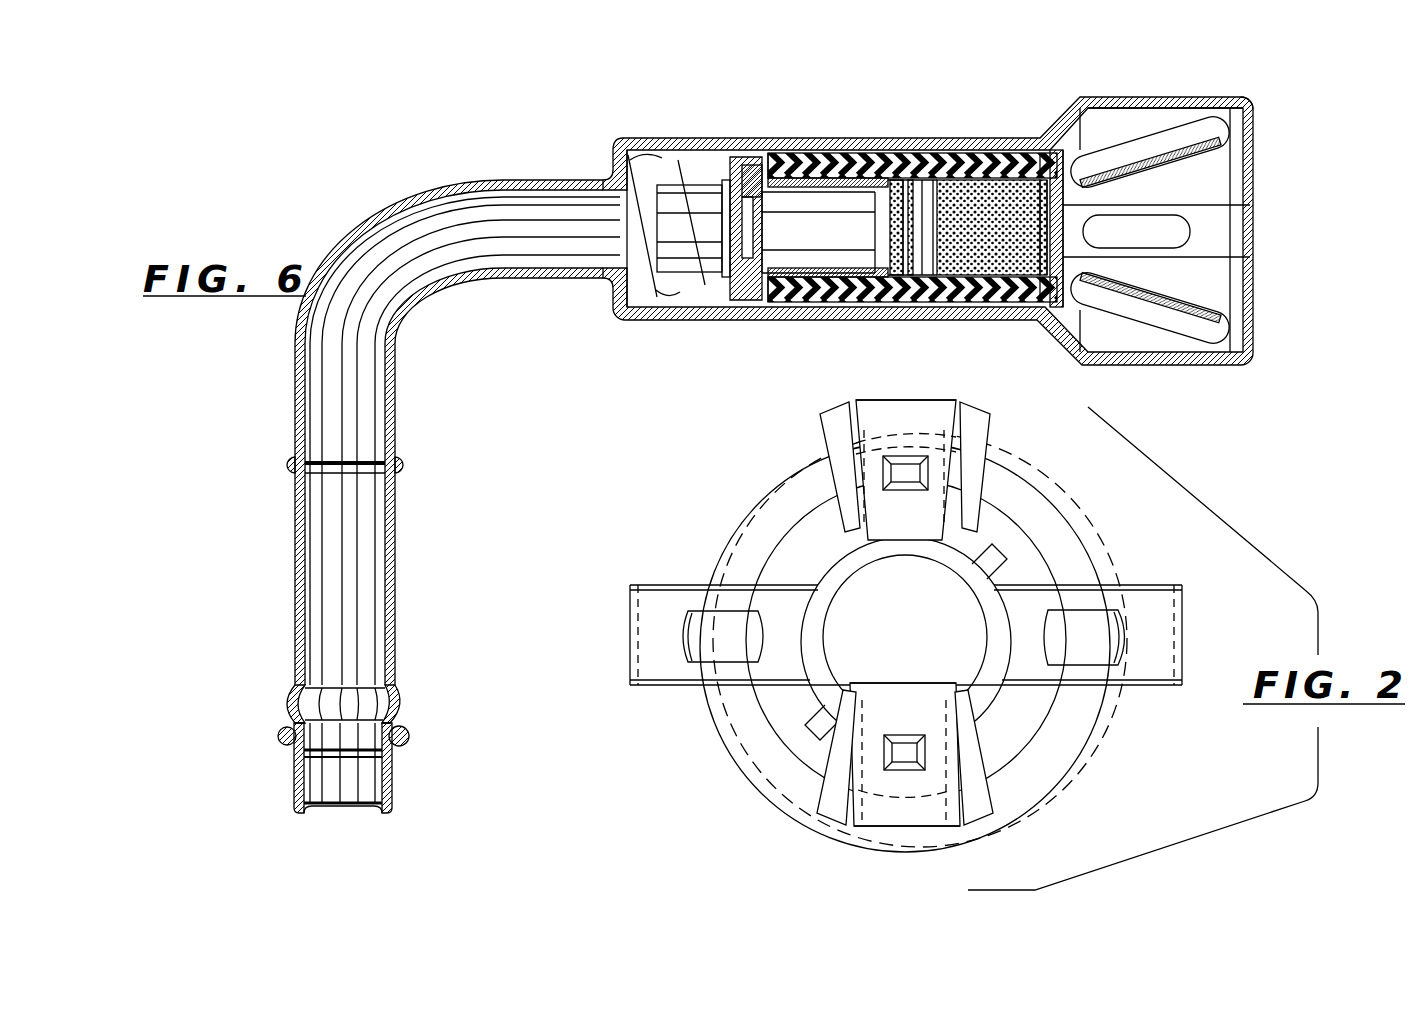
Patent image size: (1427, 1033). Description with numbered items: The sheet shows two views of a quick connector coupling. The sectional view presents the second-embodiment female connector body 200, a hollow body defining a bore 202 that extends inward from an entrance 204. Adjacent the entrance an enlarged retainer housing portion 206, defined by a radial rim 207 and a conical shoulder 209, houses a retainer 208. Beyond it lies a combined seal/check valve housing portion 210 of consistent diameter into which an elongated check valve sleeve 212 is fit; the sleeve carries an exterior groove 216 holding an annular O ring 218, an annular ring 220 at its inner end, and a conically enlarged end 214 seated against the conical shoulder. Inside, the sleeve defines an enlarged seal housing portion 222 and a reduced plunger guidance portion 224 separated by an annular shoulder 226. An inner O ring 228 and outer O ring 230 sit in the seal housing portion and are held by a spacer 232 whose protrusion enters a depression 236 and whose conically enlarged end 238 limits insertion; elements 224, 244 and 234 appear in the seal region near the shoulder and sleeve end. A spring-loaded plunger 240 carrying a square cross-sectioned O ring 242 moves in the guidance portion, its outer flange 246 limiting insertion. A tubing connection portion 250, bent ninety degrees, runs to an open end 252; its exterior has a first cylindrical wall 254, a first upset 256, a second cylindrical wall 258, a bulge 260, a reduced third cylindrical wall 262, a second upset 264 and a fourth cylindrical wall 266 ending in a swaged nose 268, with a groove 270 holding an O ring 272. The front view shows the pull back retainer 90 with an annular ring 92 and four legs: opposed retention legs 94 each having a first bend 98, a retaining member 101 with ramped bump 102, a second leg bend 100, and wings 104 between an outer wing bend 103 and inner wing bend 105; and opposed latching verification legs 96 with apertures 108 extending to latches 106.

In FIG. 6, the female connector body 200 is at (315, 205).
In FIG. 6, the tubing connection portion 250 is at (523, 178).
In FIG. 6, the first cylindrical wall 254 is at (408, 335).
In FIG. 6, the bore 202 is at (553, 255).
In FIG. 6, the first upset 256 is at (400, 462).
In FIG. 6, the second cylindrical wall 258 is at (295, 555).
In FIG. 6, the bulge 260 is at (403, 697).
In FIG. 6, the groove 270 is at (292, 722).
In FIG. 6, the "O" ring 272 is at (279, 744).
In FIG. 6, the third cylindrical wall 262 is at (410, 732).
In FIG. 6, the fourth cylindrical wall 266 is at (295, 772).
In FIG. 6, the second upset 264 is at (398, 752).
In FIG. 6, the nose 268 is at (300, 814).
In FIG. 6, the open end 252 is at (370, 816).
In FIG. 6, the seal/check valve housing portion 210 is at (680, 288).
In FIG. 6, the spring-loaded plunger 240 is at (738, 157).
In FIG. 6, the annular ring 220 is at (782, 290).
In FIG. 6, the square cross-sectioned "O" ring 242 is at (752, 155).
In FIG. 6, the outer flange 246 is at (818, 232).
In FIG. 6, the exterior groove 216 is at (810, 150).
In FIG. 6, the annular "O" ring 218 is at (792, 300).
In FIG. 6, the check valve sleeve 212 is at (873, 152).
In FIG. 6, the annular shoulder 226 is at (890, 305).
In FIG. 6, the plunger guidance portion 224 is at (863, 145).
In FIG. 6, the lower seal end 244 is at (813, 297).
In FIG. 6, the inner annular "O" ring 228 is at (937, 142).
In FIG. 6, the outer annular "O" ring 230 is at (947, 310).
In FIG. 6, the seal housing portion 222 is at (929, 278).
In FIG. 6, the depression 236 is at (1015, 227).
In FIG. 6, the conically enlarged end 214 is at (1043, 257).
In FIG. 6, the spacer 232 is at (970, 170).
In FIG. 6, the lower seal right end 234 is at (1027, 294).
In FIG. 6, the entrance 204 is at (1255, 300).
In FIG. 6, the conical shoulder 209 is at (1080, 127).
In FIG. 6, the radial rim 207 is at (1252, 102).
In FIG. 6, the end of spacer 238 is at (1065, 185).
In FIG. 6, the retainer housing portion 206 is at (1143, 122).
In FIG. 6, the retainer 208 is at (1117, 337).
In FIG. 2, the pull back retainer 90 is at (727, 470).
In FIG. 2, the annular ring 92 is at (956, 562).
In FIG. 2, the inner wing bend 105 is at (880, 660).
In FIG. 2, the latching verification leg 96 is at (660, 608).
In FIG. 2, the aperture 108 is at (752, 600).
In FIG. 2, the latch 106 is at (1160, 585).
In FIG. 2, the retention leg 94 is at (925, 436).
In FIG. 2, the first bend 98 is at (857, 398).
In FIG. 2, the second leg bend 100 is at (895, 690).
In FIG. 2, the retaining member 101 is at (883, 790).
In FIG. 2, the ramped bump 102 is at (908, 470).
In FIG. 2, the outer wing bend 103 is at (985, 418).
In FIG. 2, the wing 104 is at (836, 418).